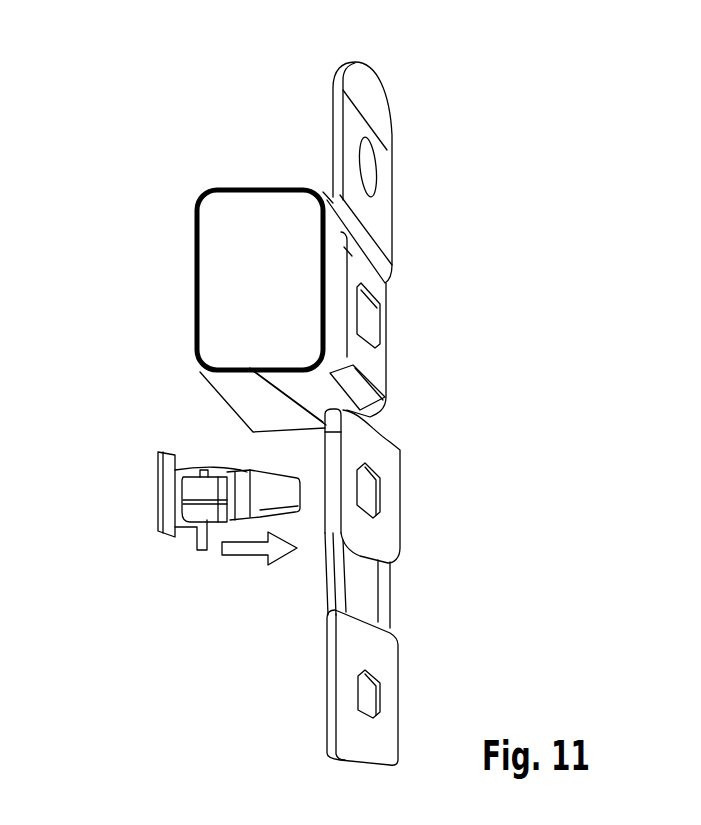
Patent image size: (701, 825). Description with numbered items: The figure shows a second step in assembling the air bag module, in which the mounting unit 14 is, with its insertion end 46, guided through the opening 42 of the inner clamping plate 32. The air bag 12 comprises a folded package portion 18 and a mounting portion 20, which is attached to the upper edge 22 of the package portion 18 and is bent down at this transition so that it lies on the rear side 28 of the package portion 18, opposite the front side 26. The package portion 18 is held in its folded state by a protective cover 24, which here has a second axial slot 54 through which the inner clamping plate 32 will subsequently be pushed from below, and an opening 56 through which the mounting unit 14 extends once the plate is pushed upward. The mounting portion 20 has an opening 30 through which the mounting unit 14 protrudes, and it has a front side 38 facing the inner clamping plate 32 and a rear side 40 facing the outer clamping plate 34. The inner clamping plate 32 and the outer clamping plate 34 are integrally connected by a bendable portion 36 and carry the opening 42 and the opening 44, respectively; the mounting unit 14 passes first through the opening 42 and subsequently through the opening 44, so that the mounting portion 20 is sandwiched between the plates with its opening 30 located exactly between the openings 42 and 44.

The air bag 12 is at (152, 150).
The mounting unit 14 is at (190, 494).
The folded package portion 18 is at (218, 296).
The mounting portion 20 is at (365, 95).
The upper edge 22 is at (331, 197).
The protective cover 24 is at (378, 292).
The front side 26 is at (128, 252).
The rear side 28 is at (512, 266).
The opening 30 is at (368, 168).
The inner clamping plate 32 is at (388, 458).
The outer clamping plate 34 is at (387, 653).
The bendable portion 36 is at (342, 586).
The front side 38 is at (384, 211).
The rear side 40 is at (333, 117).
The opening 42 is at (370, 497).
The opening 44 is at (368, 697).
The insertion end 46 is at (284, 488).
The second axial slot 54 is at (378, 406).
The opening 56 is at (369, 325).